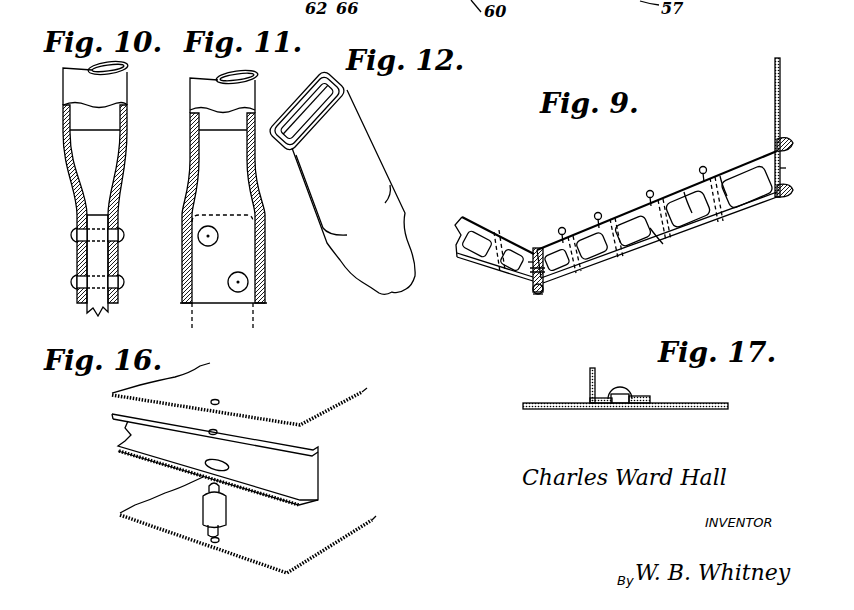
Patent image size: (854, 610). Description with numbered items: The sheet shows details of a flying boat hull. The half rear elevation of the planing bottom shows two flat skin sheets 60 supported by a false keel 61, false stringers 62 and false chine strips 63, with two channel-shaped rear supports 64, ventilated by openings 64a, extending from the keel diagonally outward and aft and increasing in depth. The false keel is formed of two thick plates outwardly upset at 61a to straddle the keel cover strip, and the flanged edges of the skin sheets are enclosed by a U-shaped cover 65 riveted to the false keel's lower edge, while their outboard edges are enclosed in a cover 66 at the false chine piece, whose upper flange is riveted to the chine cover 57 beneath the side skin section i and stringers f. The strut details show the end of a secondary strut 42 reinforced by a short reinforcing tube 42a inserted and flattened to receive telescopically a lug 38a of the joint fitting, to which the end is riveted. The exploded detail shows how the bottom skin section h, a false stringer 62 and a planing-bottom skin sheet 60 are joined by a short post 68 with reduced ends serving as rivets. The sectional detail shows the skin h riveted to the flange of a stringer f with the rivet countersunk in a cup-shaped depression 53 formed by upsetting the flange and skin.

In FIG. 10, the secondary strut 42 is at (115, 90).
In FIG. 11, the secondary strut 42 is at (208, 92).
In FIG. 12, the secondary strut 42 is at (358, 167).
In FIG. 10, the reinforcing tube 42a is at (82, 168).
In FIG. 11, the reinforcing tube 42a is at (201, 175).
In FIG. 12, the reinforcing tube 42a is at (303, 108).
In FIG. 10, the lug 38a is at (100, 262).
In FIG. 9, the top side skin section i is at (774, 83).
In FIG. 9, the U-shaped chine cover 57 is at (788, 140).
In FIG. 9, the false chine strip 63 is at (786, 168).
In FIG. 9, the cover 66 is at (790, 203).
In FIG. 9, the bottom skin section h is at (725, 170).
In FIG. 16, the bottom skin section h is at (310, 395).
In FIG. 17, the bottom skin section h is at (567, 410).
In FIG. 9, the false stringer 62 is at (582, 292).
In FIG. 16, the false stringer 62 is at (303, 467).
In FIG. 9, the channel-shaped rear support 64 is at (710, 222).
In FIG. 9, the ventilating openings 64a is at (690, 218).
In FIG. 9, the longitudinal stringer f is at (600, 213).
In FIG. 17, the longitudinal stringer f is at (597, 378).
In FIG. 9, the skin sheet 60 is at (474, 262).
In FIG. 16, the skin sheet 60 is at (317, 527).
In FIG. 9, the false keel 61 is at (533, 275).
In FIG. 9, the upset upper edge of false keel 61a is at (531, 262).
In FIG. 9, the U-shaped cover 65 is at (542, 292).
In FIG. 16, the post 68 is at (212, 505).
In FIG. 17, the cup-shaped depression 53 is at (633, 394).